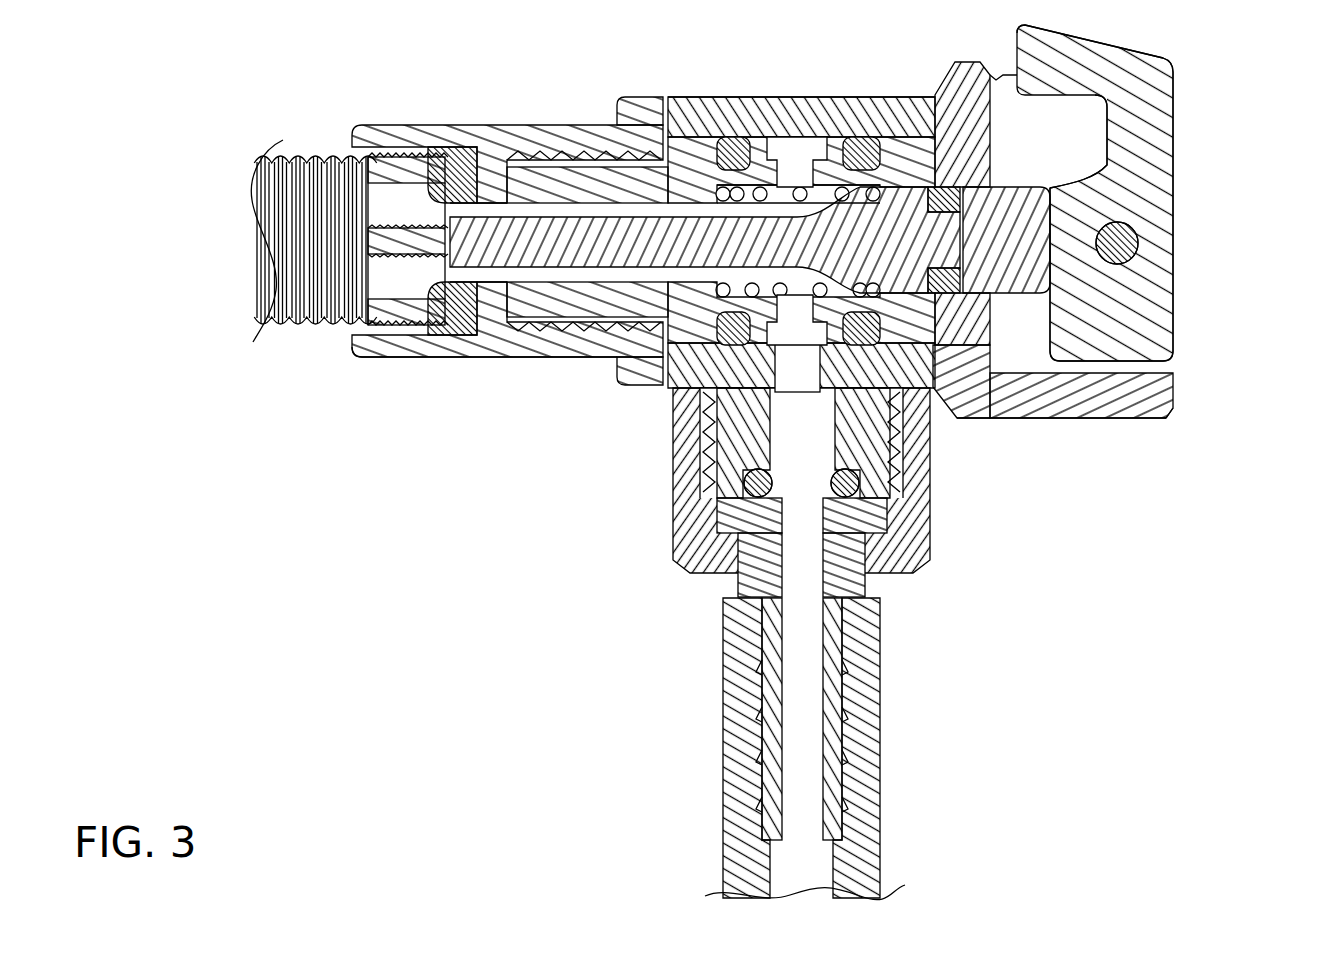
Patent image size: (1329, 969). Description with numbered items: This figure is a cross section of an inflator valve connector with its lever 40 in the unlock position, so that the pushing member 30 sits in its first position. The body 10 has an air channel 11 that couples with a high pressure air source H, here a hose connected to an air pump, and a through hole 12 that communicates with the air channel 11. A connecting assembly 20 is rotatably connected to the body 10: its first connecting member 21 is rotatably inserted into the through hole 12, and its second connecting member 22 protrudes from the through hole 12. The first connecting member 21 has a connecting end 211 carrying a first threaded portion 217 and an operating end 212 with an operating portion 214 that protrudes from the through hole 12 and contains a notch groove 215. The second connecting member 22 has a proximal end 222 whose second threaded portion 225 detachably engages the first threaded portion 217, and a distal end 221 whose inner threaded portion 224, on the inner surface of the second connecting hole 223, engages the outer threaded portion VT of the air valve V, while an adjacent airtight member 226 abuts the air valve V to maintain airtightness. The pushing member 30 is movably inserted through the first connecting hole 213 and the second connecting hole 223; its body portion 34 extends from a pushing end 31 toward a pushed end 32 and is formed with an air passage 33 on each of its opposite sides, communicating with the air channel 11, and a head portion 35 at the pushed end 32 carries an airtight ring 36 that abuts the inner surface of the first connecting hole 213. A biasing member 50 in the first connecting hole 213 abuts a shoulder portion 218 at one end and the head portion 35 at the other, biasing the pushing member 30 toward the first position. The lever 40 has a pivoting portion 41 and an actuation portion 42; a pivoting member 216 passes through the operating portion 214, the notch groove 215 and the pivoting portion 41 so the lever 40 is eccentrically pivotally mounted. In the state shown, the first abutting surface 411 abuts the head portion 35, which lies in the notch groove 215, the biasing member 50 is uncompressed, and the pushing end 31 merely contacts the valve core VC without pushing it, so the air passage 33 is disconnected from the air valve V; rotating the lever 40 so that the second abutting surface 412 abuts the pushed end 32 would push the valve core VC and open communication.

The body 10 is at (856, 90).
The air channel 11 is at (770, 380).
The through hole 12 is at (783, 150).
The connecting assembly 20 is at (557, 108).
The first connecting member 21 is at (903, 135).
The second connecting member 22 is at (497, 122).
The pushing member 30 is at (676, 97).
The pushing end 31 is at (436, 212).
The pushed end 32 is at (1110, 158).
The air passage 33 is at (603, 212).
The body portion 34 is at (643, 240).
The head portion 35 is at (1018, 218).
The airtight ring 36 is at (953, 185).
The lever 40 is at (1194, 71).
The pivoting portion 41 is at (1131, 327).
The actuation portion 42 is at (1050, 55).
The biasing member 50 is at (837, 423).
The connecting end 211 is at (528, 350).
The operating end 212 is at (1138, 440).
The first connecting hole 213 is at (850, 150).
The operating portion 214 is at (1099, 408).
The notch groove 215 is at (1036, 355).
The pivoting member 216 is at (1127, 243).
The first threaded portion 217 is at (605, 360).
The shoulder portion 218 is at (727, 140).
The distal end 221 is at (345, 372).
The proximal end 222 is at (648, 412).
The second connecting hole 223 is at (453, 158).
The inner threaded portion 224 is at (376, 157).
The second threaded portion 225 is at (522, 150).
The airtight member 226 is at (455, 335).
The first abutting surface 411 is at (1043, 281).
The second abutting surface 412 is at (1145, 373).
The air valve V is at (283, 140).
The outer threaded portion VT is at (372, 325).
The valve core VC is at (416, 258).
The high pressure air source H is at (860, 698).